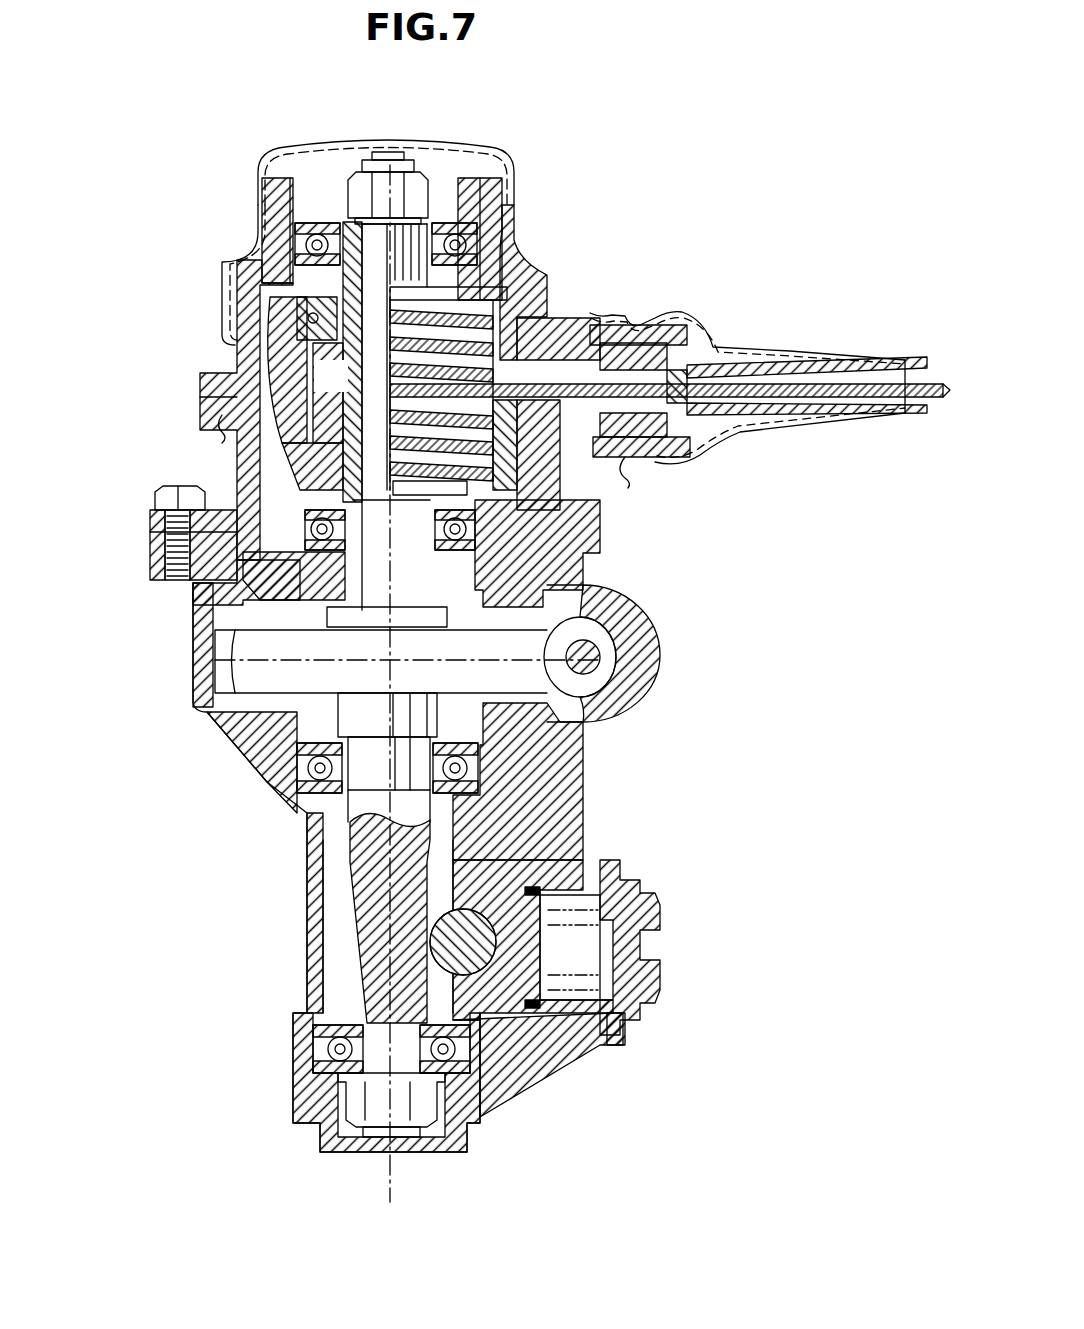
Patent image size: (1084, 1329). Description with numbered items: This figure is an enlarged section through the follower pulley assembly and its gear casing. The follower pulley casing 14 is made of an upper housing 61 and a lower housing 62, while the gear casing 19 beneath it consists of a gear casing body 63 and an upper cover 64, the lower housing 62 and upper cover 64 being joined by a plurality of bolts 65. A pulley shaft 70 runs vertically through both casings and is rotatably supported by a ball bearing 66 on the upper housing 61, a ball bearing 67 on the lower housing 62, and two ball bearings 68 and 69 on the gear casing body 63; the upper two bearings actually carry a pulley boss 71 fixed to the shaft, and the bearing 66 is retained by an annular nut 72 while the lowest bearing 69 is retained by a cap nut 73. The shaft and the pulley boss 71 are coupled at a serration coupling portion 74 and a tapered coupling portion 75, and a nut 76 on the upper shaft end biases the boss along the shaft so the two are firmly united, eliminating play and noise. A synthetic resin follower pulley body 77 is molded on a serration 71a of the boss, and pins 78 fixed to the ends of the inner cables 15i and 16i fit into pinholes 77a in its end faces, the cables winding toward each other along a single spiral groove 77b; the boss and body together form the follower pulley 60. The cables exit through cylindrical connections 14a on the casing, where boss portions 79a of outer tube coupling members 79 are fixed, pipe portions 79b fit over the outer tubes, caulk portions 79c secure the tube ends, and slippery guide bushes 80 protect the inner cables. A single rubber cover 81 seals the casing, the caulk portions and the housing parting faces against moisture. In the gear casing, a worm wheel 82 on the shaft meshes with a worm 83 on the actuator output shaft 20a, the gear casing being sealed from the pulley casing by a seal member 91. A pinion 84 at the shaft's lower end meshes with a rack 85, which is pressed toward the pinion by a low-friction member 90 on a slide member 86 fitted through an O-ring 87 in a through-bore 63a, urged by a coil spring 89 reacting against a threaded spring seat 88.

The follower pulley casing 14 is at (113, 313).
The cylindrical connection 14a is at (695, 318).
The inner cable 15i is at (497, 283).
The inner cable 16i is at (505, 420).
The gear casing 19 is at (115, 623).
The output shaft 20a is at (597, 645).
The follower pulley 60 is at (580, 327).
The upper housing 61 is at (220, 346).
The lower housing 62 is at (232, 453).
The gear casing body 63 is at (207, 713).
The through-bore 63a is at (500, 1040).
The upper cover 64 is at (160, 583).
The bolt 65 is at (157, 497).
The ball bearing 66 is at (455, 243).
The ball bearing 67 is at (580, 517).
The ball bearing 68 is at (290, 790).
The ball bearing 69 is at (330, 1053).
The pulley shaft 70 is at (388, 545).
The pulley boss 71 is at (343, 392).
The serration 71a is at (259, 619).
The annular nut 72 is at (300, 192).
The cap nut 73 is at (340, 1152).
The serration coupling portion 74 is at (330, 150).
The tapered coupling portion 75 is at (352, 432).
The nut 76 is at (398, 190).
The follower pulley body 77 is at (497, 287).
The pinhole 77a is at (312, 282).
The spiral groove 77b is at (280, 463).
The pin 78 is at (290, 330).
The outer tube coupling member 79 is at (715, 357).
The boss portion 79a is at (622, 340).
The pipe portion 79b is at (762, 365).
The caulk portion 79c is at (770, 350).
The guide bush 80 is at (653, 462).
The rubber cover 81 is at (388, 158).
The worm wheel 82 is at (297, 765).
The worm 83 is at (600, 683).
The pinion 84 is at (360, 980).
The rack 85 is at (493, 1003).
The slide member 86 is at (545, 900).
The O-ring 87 is at (560, 850).
The spring seat 88 is at (653, 913).
The coil spring 89 is at (623, 1035).
The low-friction member 90 is at (470, 906).
The seal member 91 is at (381, 661).